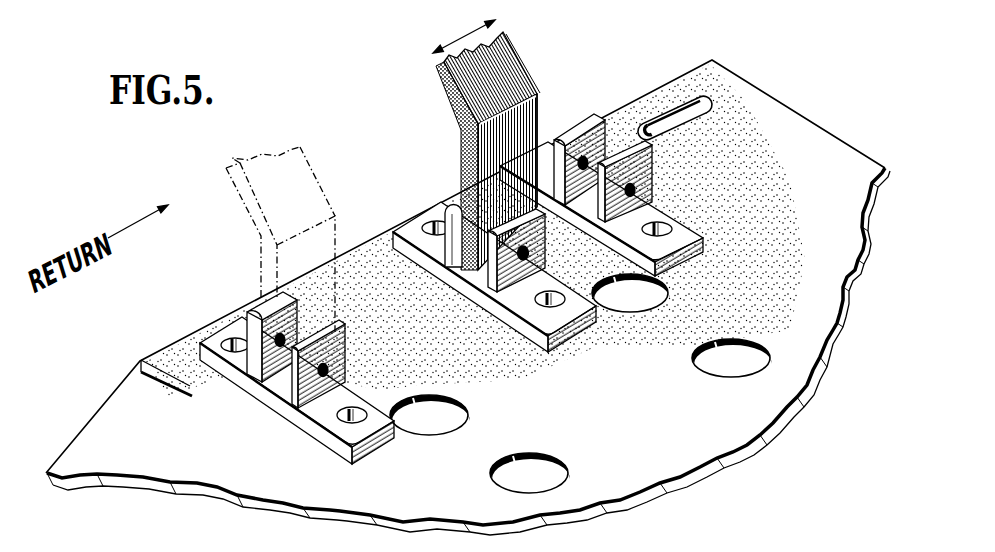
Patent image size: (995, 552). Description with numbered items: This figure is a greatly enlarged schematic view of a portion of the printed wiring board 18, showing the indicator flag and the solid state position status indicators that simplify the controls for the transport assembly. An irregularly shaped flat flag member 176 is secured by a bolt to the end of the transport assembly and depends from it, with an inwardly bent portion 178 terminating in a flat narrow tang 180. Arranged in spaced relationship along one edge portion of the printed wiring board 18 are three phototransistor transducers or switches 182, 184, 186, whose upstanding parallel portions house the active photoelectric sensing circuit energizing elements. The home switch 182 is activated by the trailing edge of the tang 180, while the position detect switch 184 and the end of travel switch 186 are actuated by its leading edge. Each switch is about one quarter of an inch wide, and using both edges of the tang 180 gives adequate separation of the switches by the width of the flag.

The printed wiring board 18 is at (646, 458).
The flag member 176 is at (532, 68).
The inwardly bent portion 178 is at (543, 92).
The tang 180 is at (522, 207).
The home switch 182 is at (652, 186).
The position detect switch 184 is at (498, 288).
The end of travel switch 186 is at (304, 398).